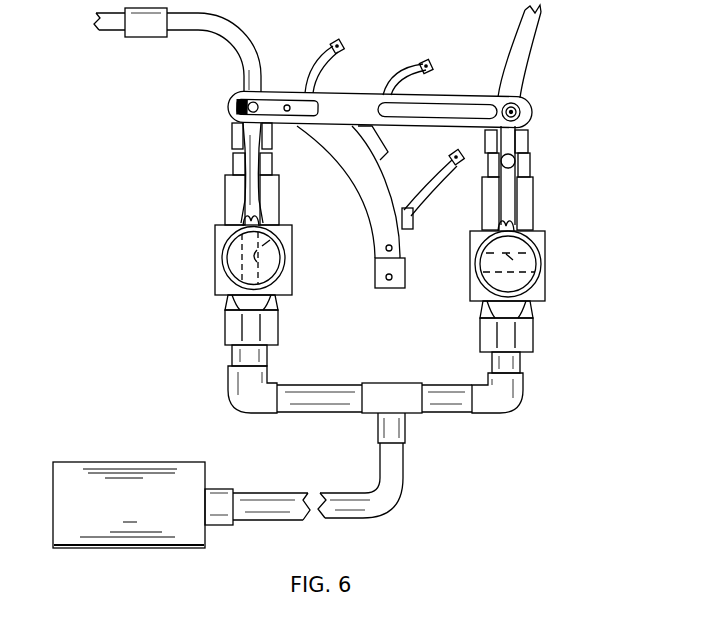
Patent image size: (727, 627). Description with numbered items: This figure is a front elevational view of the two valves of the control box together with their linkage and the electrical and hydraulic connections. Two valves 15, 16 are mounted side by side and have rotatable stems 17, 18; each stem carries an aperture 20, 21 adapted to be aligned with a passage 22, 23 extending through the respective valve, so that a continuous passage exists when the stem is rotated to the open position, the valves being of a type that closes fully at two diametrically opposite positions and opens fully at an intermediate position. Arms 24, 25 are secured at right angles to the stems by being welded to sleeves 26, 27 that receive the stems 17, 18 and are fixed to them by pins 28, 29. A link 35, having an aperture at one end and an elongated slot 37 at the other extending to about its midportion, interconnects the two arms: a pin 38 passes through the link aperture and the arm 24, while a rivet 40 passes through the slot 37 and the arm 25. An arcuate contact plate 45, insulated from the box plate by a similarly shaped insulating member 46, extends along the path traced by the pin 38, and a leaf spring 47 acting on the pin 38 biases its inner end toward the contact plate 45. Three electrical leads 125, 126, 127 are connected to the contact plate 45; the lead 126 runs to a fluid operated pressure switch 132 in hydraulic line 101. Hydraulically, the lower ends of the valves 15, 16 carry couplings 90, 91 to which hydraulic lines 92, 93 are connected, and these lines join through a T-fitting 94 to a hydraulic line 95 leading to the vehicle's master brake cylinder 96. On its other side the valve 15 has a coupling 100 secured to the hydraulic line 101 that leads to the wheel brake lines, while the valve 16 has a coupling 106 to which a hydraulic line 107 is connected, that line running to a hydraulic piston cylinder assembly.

The valve 15 is at (212, 271).
The valve 16 is at (545, 286).
The rotatable stem 17 is at (233, 254).
The rotatable stem 18 is at (518, 250).
The aperture 20 is at (273, 243).
The aperture 21 is at (535, 262).
The passage 22 is at (229, 304).
The passage 23 is at (490, 304).
The arm 24 is at (245, 194).
The arm 25 is at (500, 191).
The sleeve 26 is at (283, 256).
The sleeve 27 is at (538, 275).
The pin 28 is at (245, 223).
The pin 29 is at (500, 228).
The link 35 is at (348, 96).
The elongated slot 37 is at (444, 109).
The pin 38 is at (236, 108).
The rivet 40 is at (520, 115).
The arcuate contact plate 45 is at (347, 170).
The insulating member 46 is at (377, 282).
The leaf spring 47 is at (287, 105).
The coupling 90 is at (225, 338).
The coupling 91 is at (531, 344).
The hydraulic line 92 is at (244, 406).
The hydraulic line 93 is at (505, 400).
The T-fitting 94 is at (391, 430).
The hydraulic line 95 is at (347, 510).
The master brake cylinder 96 is at (133, 530).
The coupling 100 is at (232, 130).
The hydraulic line 101 is at (100, 27).
The coupling 106 is at (529, 145).
The hydraulic line 107 is at (539, 30).
The electrical lead 125 is at (343, 47).
The electrical lead 126 is at (427, 62).
The electrical lead 127 is at (451, 157).
The fluid operated pressure switch 132 is at (158, 37).